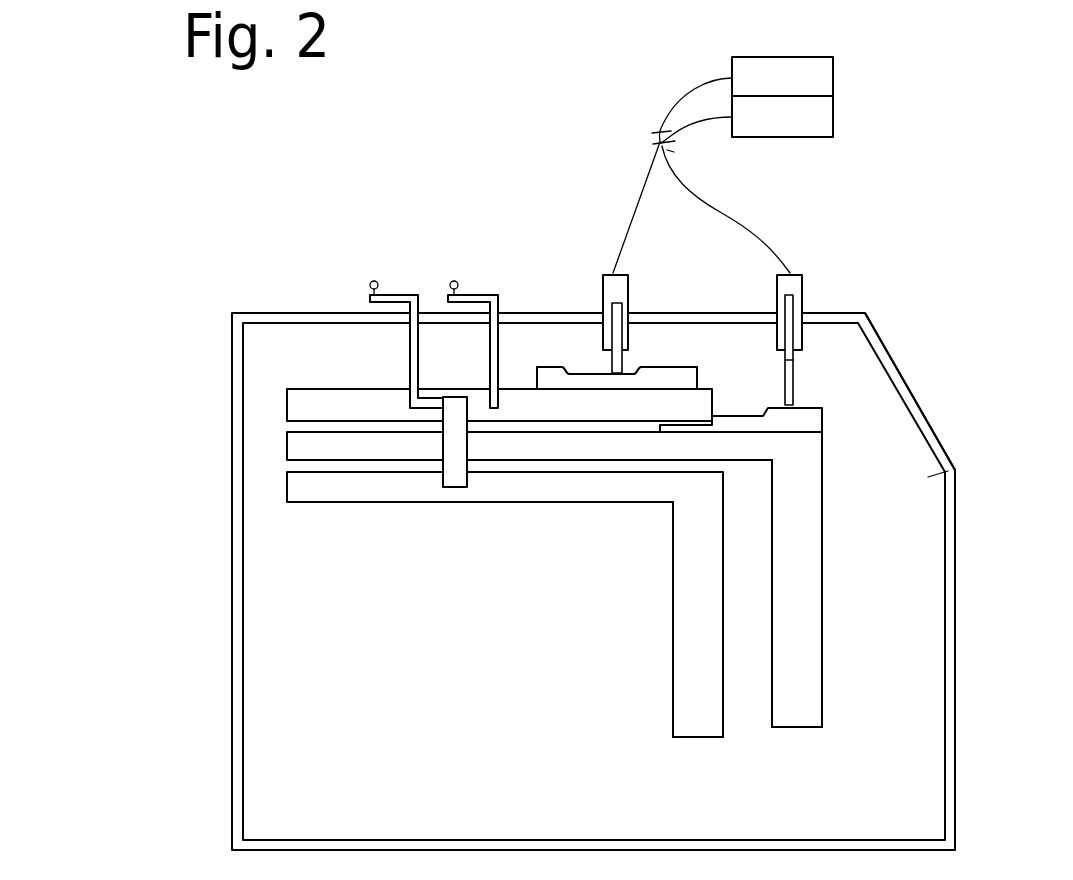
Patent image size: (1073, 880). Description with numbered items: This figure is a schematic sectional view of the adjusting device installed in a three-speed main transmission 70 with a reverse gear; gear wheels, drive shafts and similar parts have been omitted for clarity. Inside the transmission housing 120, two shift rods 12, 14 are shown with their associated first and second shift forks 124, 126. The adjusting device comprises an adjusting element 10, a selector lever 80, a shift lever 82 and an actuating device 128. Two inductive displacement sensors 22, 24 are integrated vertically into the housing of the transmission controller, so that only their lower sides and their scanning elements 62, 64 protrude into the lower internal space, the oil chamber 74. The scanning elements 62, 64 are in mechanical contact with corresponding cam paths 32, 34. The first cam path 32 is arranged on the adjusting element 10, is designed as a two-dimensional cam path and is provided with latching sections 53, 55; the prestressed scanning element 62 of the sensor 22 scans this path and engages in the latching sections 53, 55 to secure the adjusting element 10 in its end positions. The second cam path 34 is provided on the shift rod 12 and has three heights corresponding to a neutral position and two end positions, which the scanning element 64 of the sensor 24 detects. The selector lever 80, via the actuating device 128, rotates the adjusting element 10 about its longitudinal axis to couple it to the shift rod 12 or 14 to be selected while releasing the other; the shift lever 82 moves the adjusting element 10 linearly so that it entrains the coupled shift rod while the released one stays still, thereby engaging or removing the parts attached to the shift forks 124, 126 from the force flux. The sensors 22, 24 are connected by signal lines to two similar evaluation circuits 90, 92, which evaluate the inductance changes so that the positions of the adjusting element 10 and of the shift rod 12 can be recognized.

The adjusting element 10 is at (712, 403).
The shift rod 12 is at (822, 445).
The shift rod 14 is at (522, 503).
The inductive displacement sensor 22 is at (618, 268).
The inductive displacement sensor 24 is at (790, 270).
The first cam path 32 is at (688, 367).
The second cam path 34 is at (822, 420).
The latching section 53 is at (567, 375).
The latching section 55 is at (667, 375).
The scanning element 62 is at (610, 370).
The scanning element 64 is at (795, 370).
The transmission 70 is at (966, 386).
The oil chamber 74 is at (955, 470).
The selector lever 80 is at (402, 293).
The shift lever 82 is at (488, 293).
The evaluation circuit 90 is at (833, 76).
The evaluation circuit 92 is at (833, 116).
The transmission housing 120 is at (953, 528).
The first shift fork 124 is at (822, 527).
The second shift fork 126 is at (673, 523).
The actuating device 128 is at (455, 488).